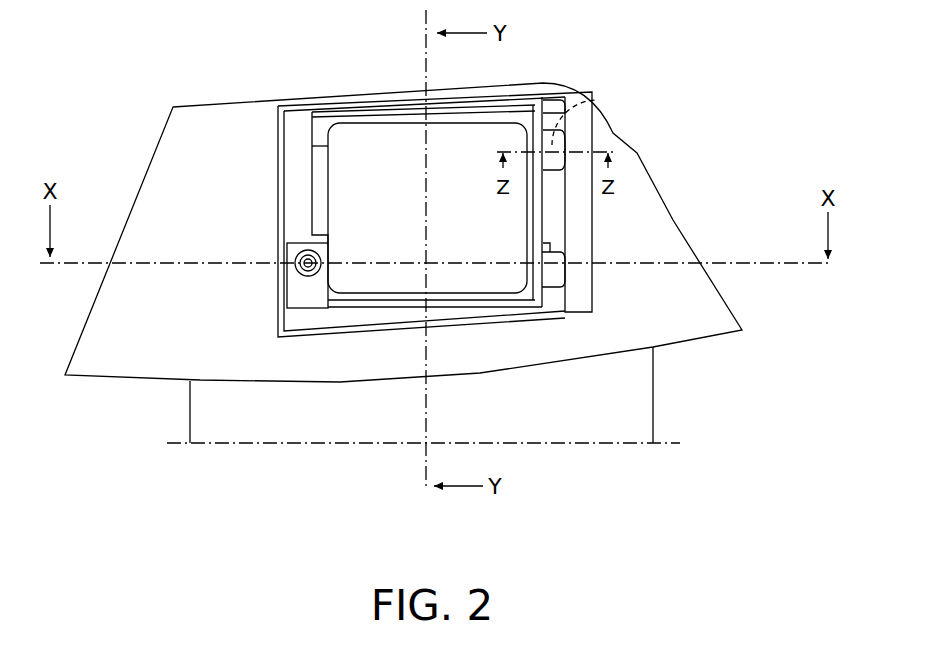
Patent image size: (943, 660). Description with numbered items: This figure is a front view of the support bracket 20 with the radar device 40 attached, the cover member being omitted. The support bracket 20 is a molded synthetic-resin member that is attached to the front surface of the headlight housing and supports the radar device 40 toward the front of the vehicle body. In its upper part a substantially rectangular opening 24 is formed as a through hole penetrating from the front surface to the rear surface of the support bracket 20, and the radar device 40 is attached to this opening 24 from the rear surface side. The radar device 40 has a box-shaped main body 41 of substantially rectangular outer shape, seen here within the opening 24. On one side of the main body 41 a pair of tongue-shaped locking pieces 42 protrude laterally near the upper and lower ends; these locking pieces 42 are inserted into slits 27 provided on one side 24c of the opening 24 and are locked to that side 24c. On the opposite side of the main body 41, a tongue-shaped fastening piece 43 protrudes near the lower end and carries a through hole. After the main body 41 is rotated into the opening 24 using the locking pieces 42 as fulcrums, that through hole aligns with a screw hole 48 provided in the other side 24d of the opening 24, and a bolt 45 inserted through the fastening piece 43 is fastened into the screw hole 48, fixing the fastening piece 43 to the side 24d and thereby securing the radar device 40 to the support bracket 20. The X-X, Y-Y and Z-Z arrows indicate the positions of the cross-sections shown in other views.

The support bracket 20 is at (638, 152).
The opening 24 is at (476, 127).
The one side of the opening 24c is at (540, 206).
The another side of the opening 24d is at (313, 188).
The slit 27 is at (572, 138).
The radar device 40 is at (363, 120).
The main body 41 is at (395, 130).
The locking piece 42 is at (555, 102).
The fastening piece 43 is at (292, 277).
The bolt 45 is at (313, 276).
The screw hole 48 is at (309, 270).